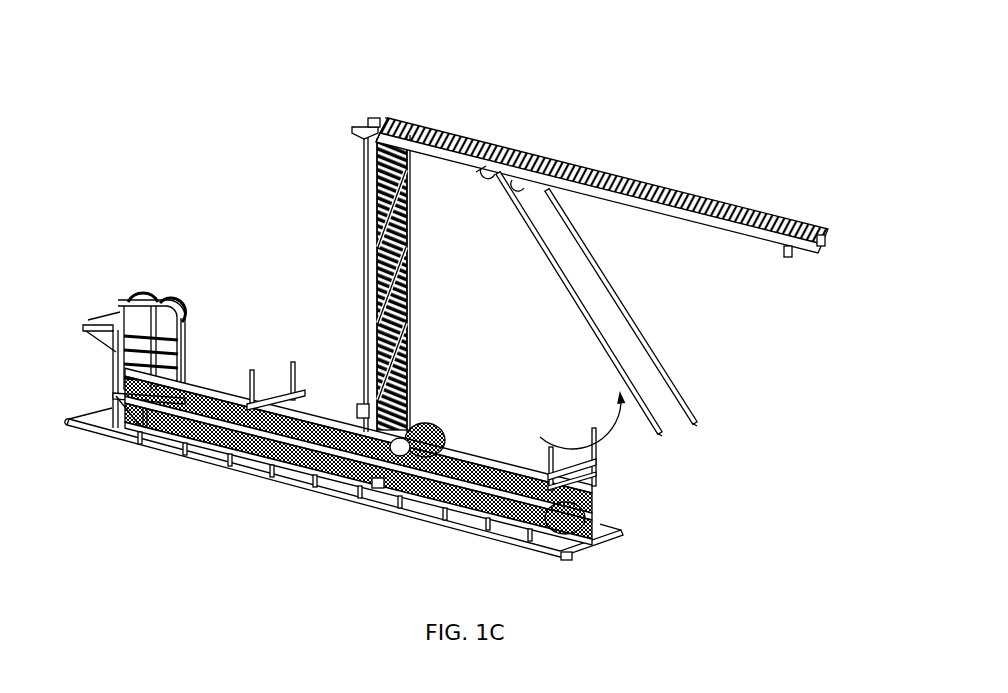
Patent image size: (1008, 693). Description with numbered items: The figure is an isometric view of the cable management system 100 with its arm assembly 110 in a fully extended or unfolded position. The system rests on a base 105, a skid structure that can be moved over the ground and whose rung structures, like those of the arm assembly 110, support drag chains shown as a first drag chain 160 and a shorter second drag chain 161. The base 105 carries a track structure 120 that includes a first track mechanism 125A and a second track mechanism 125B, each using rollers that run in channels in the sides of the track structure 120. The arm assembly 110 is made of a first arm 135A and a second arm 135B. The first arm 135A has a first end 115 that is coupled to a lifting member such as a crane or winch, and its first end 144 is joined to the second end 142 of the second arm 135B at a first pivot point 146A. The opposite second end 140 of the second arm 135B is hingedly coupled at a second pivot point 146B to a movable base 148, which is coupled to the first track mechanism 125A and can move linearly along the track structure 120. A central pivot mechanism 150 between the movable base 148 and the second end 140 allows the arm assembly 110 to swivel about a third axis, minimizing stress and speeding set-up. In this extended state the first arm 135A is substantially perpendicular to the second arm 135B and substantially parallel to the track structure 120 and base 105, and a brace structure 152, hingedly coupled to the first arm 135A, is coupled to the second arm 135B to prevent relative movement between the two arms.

The cable management system 100 is at (530, 103).
The base 105 is at (325, 514).
The arm assembly 110 is at (637, 152).
The first end 115 is at (821, 217).
The track structure 120 is at (640, 538).
The first track mechanism 125A is at (610, 490).
The second track mechanism 125B is at (578, 568).
The first arm 135A is at (580, 145).
The second arm 135B is at (421, 234).
The second end 140 is at (455, 279).
The second end 142 is at (349, 127).
The first end 144 is at (434, 110).
The first pivot point 146A is at (365, 114).
The second pivot point 146B is at (355, 399).
The movable base 148 is at (382, 488).
The central pivot mechanism 150 is at (434, 353).
The brace structure 152 is at (715, 418).
The first drag chain 160 is at (635, 520).
The second drag chain 161 is at (456, 424).